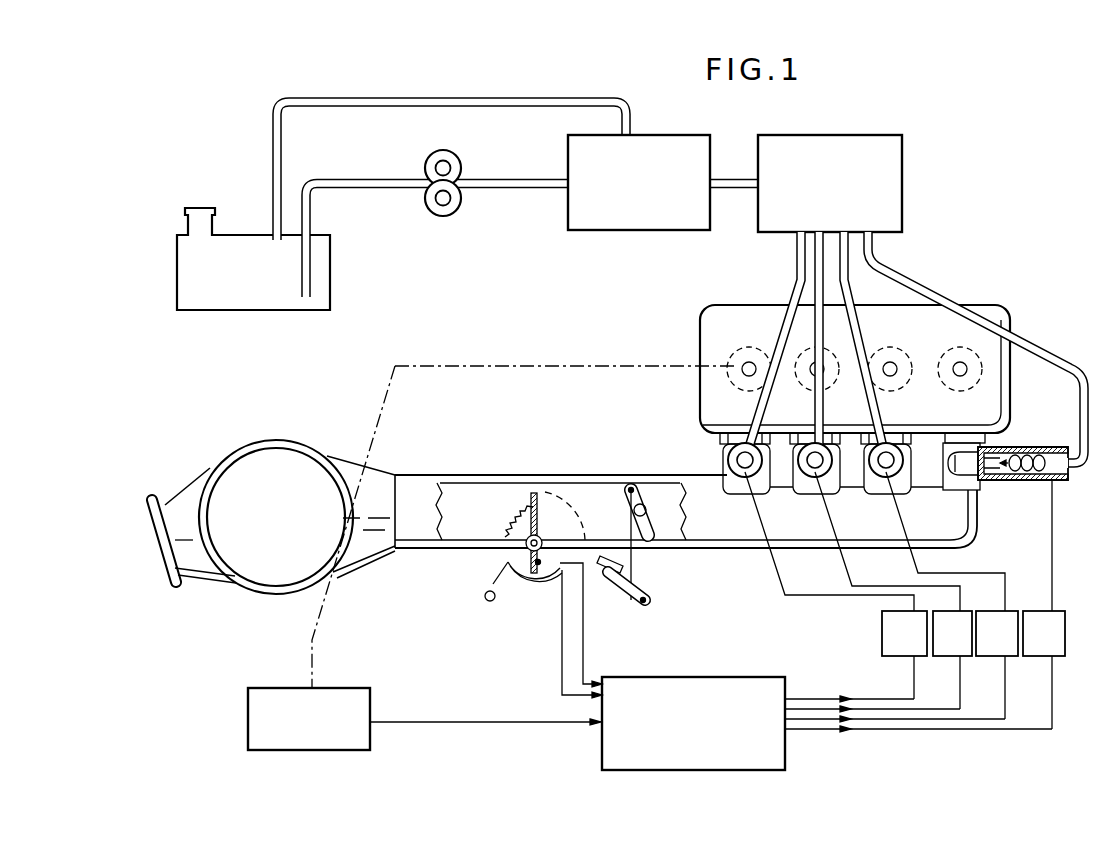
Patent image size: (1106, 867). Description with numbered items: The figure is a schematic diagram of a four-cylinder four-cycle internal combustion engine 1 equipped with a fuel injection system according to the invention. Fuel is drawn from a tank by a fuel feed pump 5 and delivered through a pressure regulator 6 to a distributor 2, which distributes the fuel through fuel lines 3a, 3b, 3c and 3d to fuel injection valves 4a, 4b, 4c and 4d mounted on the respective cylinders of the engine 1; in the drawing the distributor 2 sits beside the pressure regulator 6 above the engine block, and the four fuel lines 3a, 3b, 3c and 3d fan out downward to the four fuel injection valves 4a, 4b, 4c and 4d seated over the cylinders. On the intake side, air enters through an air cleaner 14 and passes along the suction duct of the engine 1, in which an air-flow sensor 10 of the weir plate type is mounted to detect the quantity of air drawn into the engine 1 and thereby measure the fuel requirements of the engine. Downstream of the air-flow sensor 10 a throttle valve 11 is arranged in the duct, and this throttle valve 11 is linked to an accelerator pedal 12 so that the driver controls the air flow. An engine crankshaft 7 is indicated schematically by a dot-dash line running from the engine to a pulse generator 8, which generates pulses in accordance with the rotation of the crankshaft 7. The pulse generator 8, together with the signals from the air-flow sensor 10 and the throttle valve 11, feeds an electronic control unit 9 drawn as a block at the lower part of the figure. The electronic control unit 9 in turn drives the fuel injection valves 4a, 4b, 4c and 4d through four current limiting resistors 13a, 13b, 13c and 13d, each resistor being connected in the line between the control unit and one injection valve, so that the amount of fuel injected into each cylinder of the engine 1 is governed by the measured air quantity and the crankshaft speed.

The internal combustion engine 1 is at (900, 290).
The distributor 2 is at (902, 175).
The fuel line 3a is at (888, 263).
The fuel line 3b is at (853, 290).
The fuel line 3c is at (812, 290).
The fuel line 3d is at (796, 248).
The fuel injection valve 4a is at (1042, 447).
The fuel injection valve 4b is at (884, 477).
The fuel injection valve 4c is at (812, 477).
The fuel injection valve 4d is at (740, 477).
The fuel feed pump 5 is at (456, 188).
The pressure regulator 6 is at (660, 230).
The engine crankshaft 7 is at (566, 366).
The pulse generator 8 is at (348, 688).
The electronic control unit 9 is at (736, 676).
The air-flow sensor 10 is at (535, 575).
The throttle valve 11 is at (627, 517).
The accelerator pedal 12 is at (621, 589).
The current limiting resistor 13a is at (1058, 656).
The current limiting resistor 13b is at (1012, 656).
The current limiting resistor 13c is at (966, 656).
The current limiting resistor 13d is at (922, 656).
The air cleaner 14 is at (251, 594).